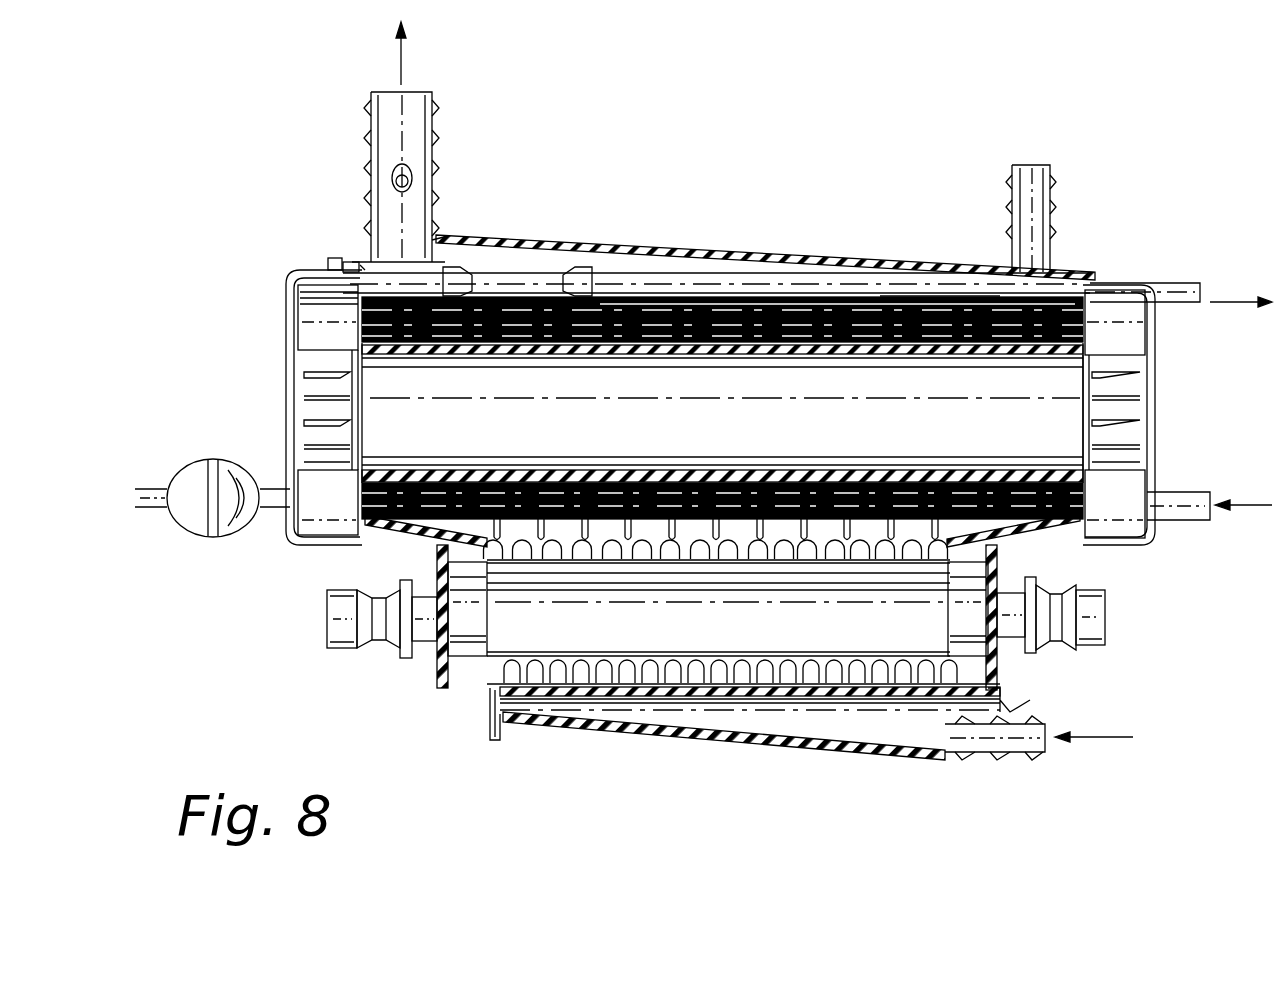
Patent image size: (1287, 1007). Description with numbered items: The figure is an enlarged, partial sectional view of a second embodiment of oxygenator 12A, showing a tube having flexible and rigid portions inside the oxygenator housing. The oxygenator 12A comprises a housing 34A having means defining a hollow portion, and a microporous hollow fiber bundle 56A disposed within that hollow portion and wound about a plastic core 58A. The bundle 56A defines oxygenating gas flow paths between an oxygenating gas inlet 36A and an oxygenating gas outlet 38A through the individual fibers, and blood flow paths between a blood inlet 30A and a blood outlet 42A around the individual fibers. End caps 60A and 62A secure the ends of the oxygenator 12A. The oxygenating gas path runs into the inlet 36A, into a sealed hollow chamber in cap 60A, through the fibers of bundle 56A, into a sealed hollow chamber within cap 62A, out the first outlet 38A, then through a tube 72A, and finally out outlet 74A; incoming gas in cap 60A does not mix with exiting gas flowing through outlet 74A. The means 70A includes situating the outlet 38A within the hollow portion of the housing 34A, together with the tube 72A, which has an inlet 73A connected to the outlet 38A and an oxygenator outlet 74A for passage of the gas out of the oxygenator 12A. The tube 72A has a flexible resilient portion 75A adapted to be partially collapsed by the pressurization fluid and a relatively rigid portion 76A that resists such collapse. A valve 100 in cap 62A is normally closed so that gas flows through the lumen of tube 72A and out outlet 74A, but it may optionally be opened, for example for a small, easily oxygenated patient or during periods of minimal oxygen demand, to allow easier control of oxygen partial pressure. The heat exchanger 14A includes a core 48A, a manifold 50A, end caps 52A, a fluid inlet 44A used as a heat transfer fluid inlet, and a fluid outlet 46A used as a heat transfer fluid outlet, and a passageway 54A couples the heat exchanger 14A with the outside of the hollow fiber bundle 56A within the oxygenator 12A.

The oxygenator 12A is at (849, 258).
The heat exchanger 14A is at (842, 750).
The blood inlet 30A is at (1045, 720).
The housing 34A is at (668, 250).
The oxygenating gas inlet 36A is at (1182, 496).
The oxygenating gas outlet 38A is at (345, 266).
The blood outlet 42A is at (415, 92).
The fluid inlet 44A is at (1106, 600).
The fluid outlet 46A is at (328, 618).
The core 48A is at (540, 556).
The manifold 50A is at (935, 565).
The end caps 52A is at (436, 666).
The passageway 54A is at (783, 525).
The hollow fiber bundle 56A is at (795, 298).
The plastic core 58A is at (968, 307).
The end cap 60A is at (1157, 400).
The end cap 62A is at (287, 318).
The means 70A is at (485, 273).
The tube 72A is at (730, 292).
The inlet 73A is at (326, 267).
The oxygenator outlet 74A is at (1190, 290).
The flexible resilient portion 75A is at (572, 268).
The relatively rigid portion 76A is at (903, 290).
The valve 100 is at (186, 536).